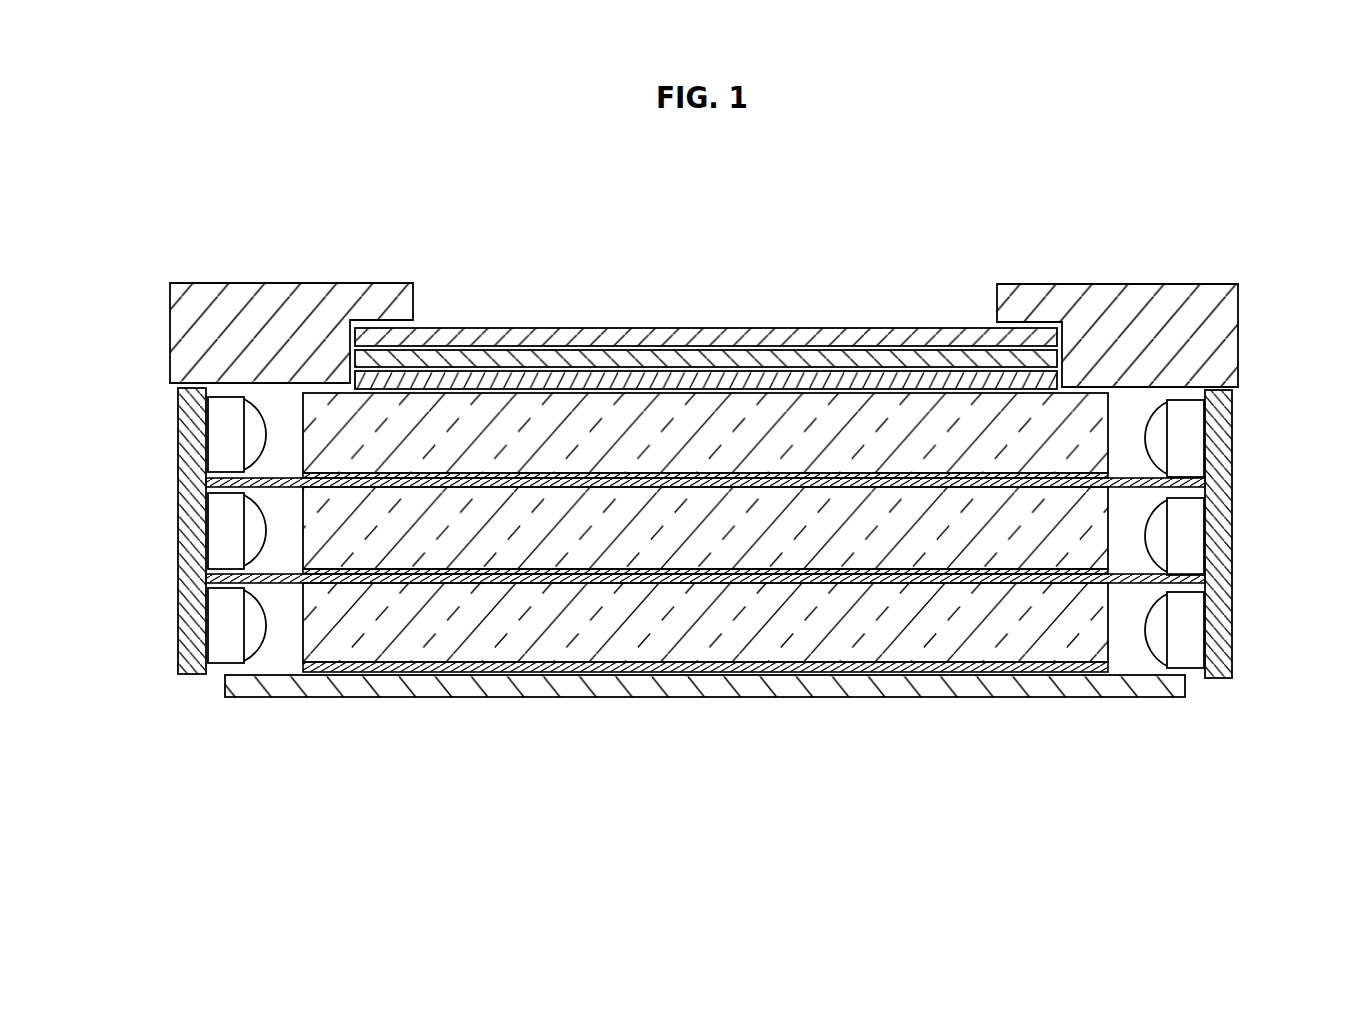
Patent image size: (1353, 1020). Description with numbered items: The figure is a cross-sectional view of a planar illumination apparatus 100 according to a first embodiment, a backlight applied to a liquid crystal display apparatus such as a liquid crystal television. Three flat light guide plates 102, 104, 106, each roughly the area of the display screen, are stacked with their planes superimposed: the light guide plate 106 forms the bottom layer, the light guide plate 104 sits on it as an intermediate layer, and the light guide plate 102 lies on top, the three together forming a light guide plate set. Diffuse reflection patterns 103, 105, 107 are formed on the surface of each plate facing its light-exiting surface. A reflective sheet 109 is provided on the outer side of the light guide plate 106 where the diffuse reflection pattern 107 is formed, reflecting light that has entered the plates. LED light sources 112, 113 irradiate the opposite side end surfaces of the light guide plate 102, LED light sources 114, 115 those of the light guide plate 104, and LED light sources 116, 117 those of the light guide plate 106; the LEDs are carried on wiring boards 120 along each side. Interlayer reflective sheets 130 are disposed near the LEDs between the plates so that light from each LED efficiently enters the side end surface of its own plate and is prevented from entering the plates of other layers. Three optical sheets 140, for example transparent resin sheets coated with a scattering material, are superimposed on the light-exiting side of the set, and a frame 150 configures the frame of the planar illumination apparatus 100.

The planar illumination apparatus 100 is at (264, 190).
The light guide plate 102 is at (505, 424).
The diffuse reflection pattern 103 is at (596, 476).
The light guide plate 104 is at (400, 557).
The diffuse reflection pattern 105 is at (478, 570).
The light guide plate 106 is at (600, 645).
The diffuse reflection pattern 107 is at (680, 668).
The reflective sheet 109 is at (968, 690).
The LED light source 112 is at (218, 442).
The LED light source 113 is at (1200, 442).
The LED light source 114 is at (218, 546).
The LED light source 115 is at (1200, 538).
The LED light source 116 is at (218, 654).
The LED light source 117 is at (1200, 635).
The wiring board 120 is at (215, 486).
The interlayer reflective sheet 130 is at (215, 580).
The optical sheet 140 is at (738, 378).
The frame 150 is at (1116, 284).